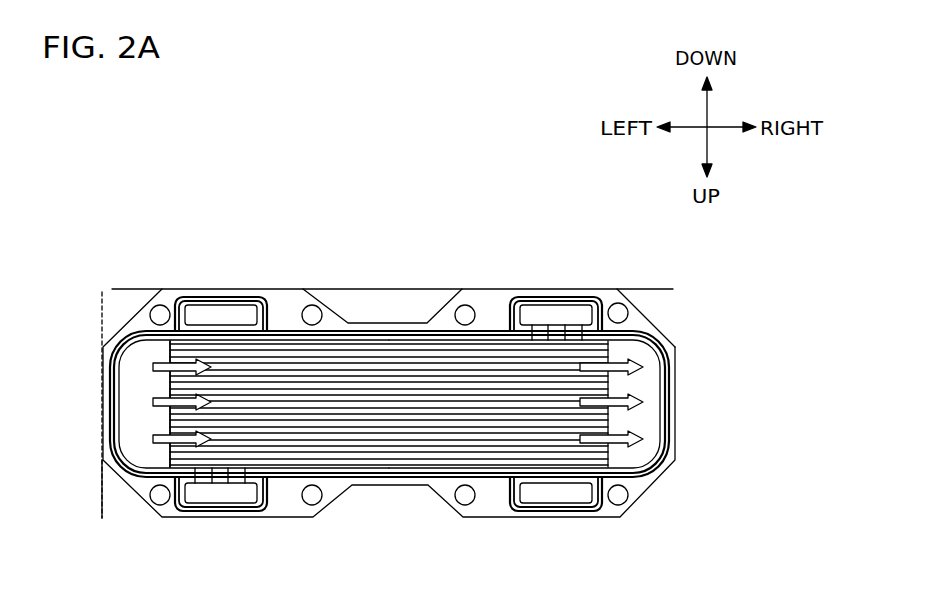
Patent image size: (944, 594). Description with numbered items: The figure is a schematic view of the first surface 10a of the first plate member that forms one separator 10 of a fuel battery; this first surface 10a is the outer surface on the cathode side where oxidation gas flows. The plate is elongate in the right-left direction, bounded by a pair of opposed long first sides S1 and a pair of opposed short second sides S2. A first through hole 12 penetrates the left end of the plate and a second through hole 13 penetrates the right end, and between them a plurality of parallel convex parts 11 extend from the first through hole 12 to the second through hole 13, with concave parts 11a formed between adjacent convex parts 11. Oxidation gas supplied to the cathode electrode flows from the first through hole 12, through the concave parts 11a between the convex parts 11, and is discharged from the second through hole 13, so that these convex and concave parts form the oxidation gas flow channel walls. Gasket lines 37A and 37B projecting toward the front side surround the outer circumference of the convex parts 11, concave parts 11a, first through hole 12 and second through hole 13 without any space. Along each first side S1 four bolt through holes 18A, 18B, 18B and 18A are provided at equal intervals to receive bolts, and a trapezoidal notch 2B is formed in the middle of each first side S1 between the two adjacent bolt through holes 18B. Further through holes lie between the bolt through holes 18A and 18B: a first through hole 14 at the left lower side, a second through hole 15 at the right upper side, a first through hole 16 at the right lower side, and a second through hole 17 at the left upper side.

The separator 10 is at (385, 389).
The first surface 10a is at (652, 322).
The trapezoidal notch 2B is at (440, 303).
The convex part 11 is at (346, 438).
The concave part 11a is at (278, 442).
The first through hole 12 is at (130, 463).
The second through hole 13 is at (643, 450).
The first through hole 14 is at (231, 318).
The second through hole 15 is at (553, 495).
The first through hole 16 is at (552, 310).
The second through hole 17 is at (223, 497).
The bolt through hole 18A is at (162, 306).
The bolt through hole 18B is at (309, 311).
The gasket line 37A is at (612, 348).
The gasket line 37B is at (612, 368).
The first side S1 is at (113, 288).
The second side S2 is at (100, 488).